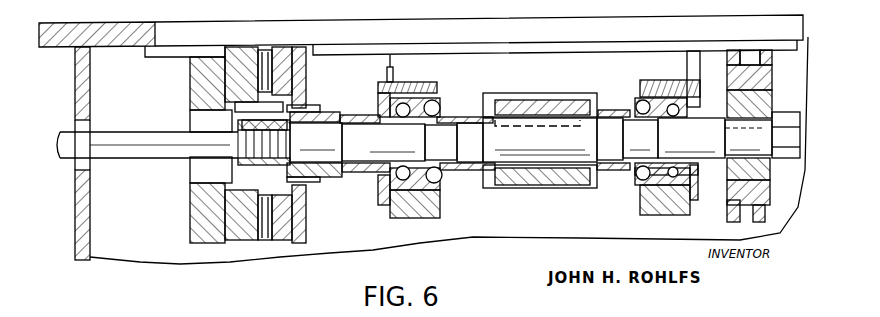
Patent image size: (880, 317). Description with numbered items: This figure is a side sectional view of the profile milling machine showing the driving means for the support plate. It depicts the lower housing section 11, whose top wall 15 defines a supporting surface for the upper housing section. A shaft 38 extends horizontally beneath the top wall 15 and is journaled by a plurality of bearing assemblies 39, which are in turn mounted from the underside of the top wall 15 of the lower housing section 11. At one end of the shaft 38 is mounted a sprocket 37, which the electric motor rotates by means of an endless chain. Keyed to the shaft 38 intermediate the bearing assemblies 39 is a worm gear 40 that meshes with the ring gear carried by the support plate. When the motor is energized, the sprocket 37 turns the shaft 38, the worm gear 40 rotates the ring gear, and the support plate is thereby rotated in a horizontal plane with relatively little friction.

The lower housing section 11 is at (83, 208).
The top wall 15 is at (539, 44).
The sprocket 37 is at (728, 217).
The shaft 38 is at (609, 160).
The bearing assemblies 39 is at (398, 180).
The worm gear 40 is at (553, 178).